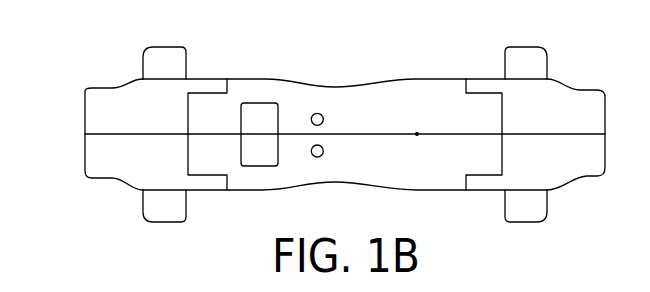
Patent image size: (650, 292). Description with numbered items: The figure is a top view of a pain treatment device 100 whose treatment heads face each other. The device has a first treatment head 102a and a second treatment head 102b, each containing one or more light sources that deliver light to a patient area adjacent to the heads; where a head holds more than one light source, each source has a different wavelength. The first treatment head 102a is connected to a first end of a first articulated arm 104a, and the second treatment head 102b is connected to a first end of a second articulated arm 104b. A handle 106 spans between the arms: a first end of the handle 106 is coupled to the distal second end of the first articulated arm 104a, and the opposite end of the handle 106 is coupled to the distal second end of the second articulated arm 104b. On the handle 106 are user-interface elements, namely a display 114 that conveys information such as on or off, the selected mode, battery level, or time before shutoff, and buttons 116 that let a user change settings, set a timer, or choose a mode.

The pain treatment device 100 is at (132, 44).
The first treatment head 102a is at (163, 222).
The second treatment head 102b is at (528, 222).
The first articulated arm 104a is at (100, 178).
The second articulated arm 104b is at (587, 178).
The handle 106 is at (332, 88).
The display 114 is at (262, 153).
The buttons 116 is at (323, 117).